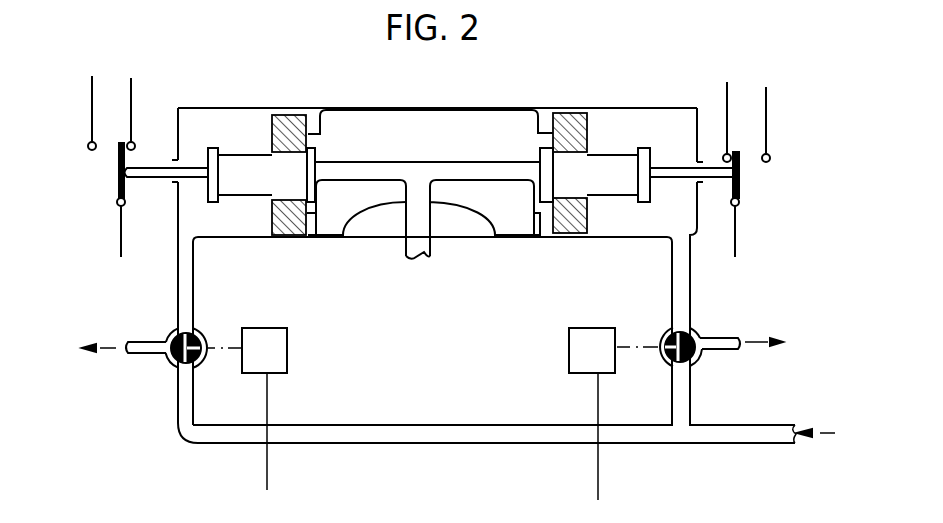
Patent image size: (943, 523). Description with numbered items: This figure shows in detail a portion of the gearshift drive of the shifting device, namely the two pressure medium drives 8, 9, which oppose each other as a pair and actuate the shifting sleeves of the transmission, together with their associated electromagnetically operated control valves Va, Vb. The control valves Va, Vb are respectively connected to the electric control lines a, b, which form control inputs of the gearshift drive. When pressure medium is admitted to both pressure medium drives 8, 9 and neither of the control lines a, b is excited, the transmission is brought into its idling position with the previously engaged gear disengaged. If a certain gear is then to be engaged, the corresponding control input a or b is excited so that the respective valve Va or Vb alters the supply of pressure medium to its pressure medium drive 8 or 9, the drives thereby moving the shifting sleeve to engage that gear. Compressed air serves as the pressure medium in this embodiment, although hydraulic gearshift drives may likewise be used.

The pressure medium drive 8 is at (232, 108).
The pressure medium drive 9 is at (630, 108).
The electromagnetically operated control valve Vb is at (222, 334).
The electromagnetically operated control valve Va is at (634, 333).
The electric control line a is at (599, 488).
The electric control line b is at (266, 482).